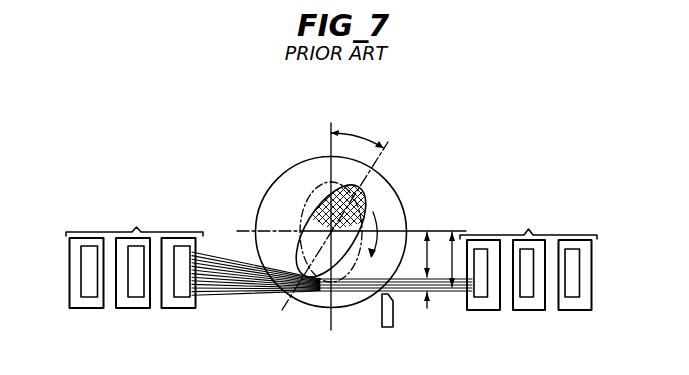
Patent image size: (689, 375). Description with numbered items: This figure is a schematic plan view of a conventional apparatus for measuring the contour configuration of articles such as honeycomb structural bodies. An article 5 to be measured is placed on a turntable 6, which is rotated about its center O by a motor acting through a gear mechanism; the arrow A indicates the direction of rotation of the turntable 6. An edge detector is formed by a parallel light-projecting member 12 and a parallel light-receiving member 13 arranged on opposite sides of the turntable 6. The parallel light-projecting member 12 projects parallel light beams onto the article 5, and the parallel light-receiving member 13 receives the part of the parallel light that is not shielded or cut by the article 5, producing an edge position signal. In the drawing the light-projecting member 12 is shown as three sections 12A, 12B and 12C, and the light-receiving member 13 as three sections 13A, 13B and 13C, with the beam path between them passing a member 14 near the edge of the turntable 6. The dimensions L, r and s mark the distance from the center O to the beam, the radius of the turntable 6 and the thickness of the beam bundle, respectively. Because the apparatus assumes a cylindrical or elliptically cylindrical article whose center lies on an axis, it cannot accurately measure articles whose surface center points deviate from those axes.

The article 5 is at (320, 189).
The turntable 6 is at (388, 177).
The parallel light-projecting member 12 is at (150, 218).
The light emitting element 12A is at (87, 308).
The light emitting element 12B is at (133, 308).
The light emitting element 12C is at (178, 308).
The parallel light-receiving member 13 is at (541, 220).
The light receiving element 13A is at (577, 310).
The light receiving element 13B is at (531, 310).
The light receiving element 13C is at (486, 310).
The optical fiber holder 14 is at (385, 327).
The center of rotation O is at (305, 218).
The rotation direction A is at (382, 225).
The distance L is at (451, 254).
The radius r is at (427, 259).
The fiber bundle thickness s is at (433, 292).